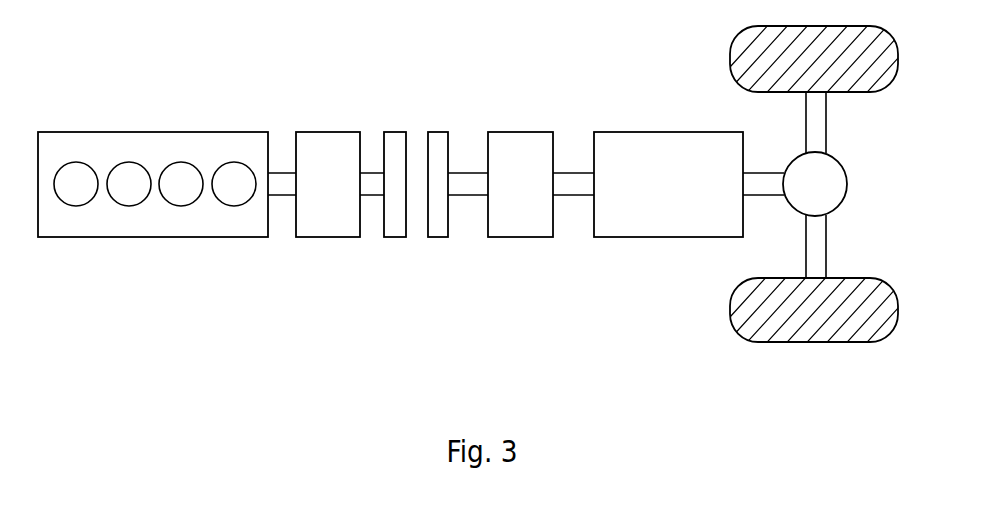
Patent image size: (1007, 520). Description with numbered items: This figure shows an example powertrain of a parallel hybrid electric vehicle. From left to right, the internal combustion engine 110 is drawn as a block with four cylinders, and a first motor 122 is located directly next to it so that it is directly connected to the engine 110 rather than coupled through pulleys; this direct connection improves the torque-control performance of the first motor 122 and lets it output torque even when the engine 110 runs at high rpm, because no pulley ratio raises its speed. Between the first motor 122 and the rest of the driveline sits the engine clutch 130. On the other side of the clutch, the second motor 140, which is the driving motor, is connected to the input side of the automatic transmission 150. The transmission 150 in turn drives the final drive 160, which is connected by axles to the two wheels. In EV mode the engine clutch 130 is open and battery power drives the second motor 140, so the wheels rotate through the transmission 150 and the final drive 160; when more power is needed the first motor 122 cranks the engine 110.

The internal combustion engine 110 is at (228, 132).
The first motor 122 is at (333, 130).
The engine clutch 130 is at (445, 130).
The second motor 140 is at (530, 130).
The transmission 150 is at (703, 130).
The final drive 160 is at (848, 167).